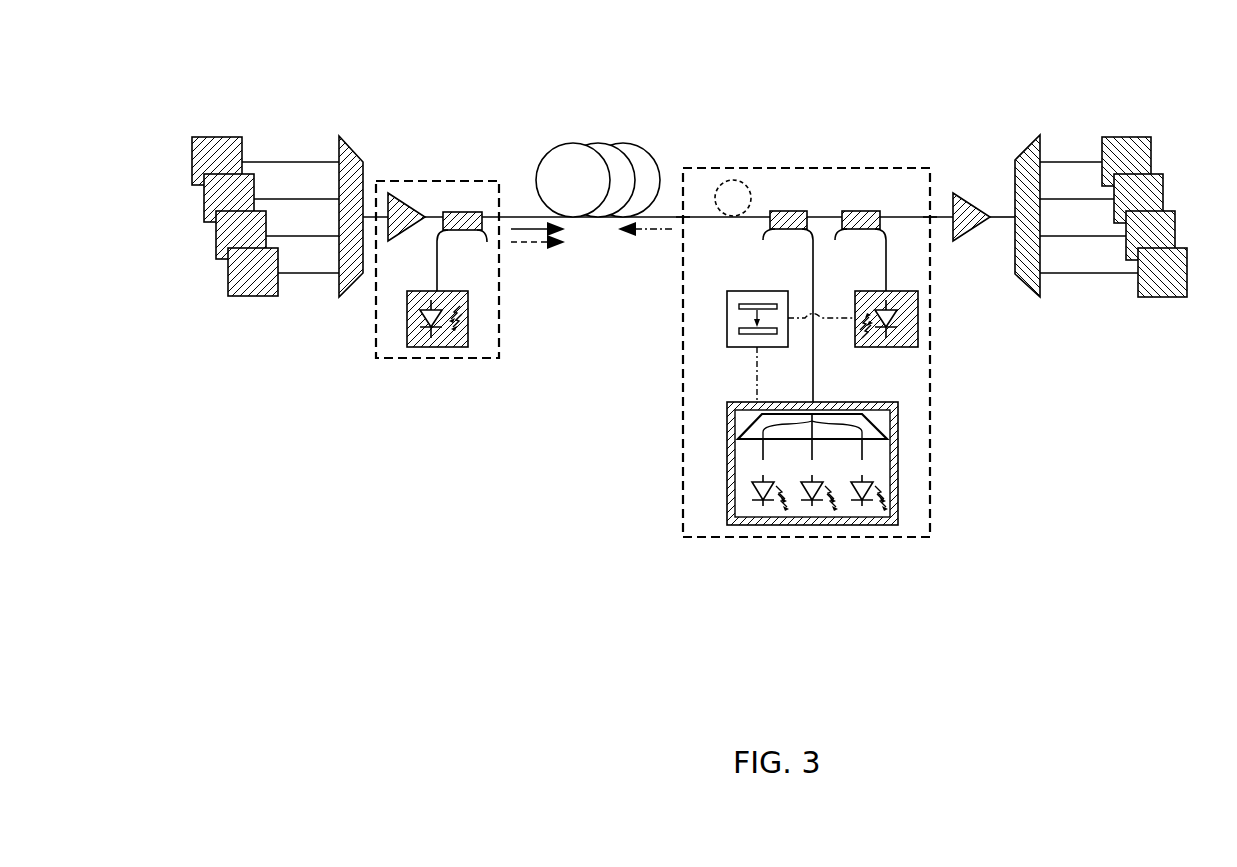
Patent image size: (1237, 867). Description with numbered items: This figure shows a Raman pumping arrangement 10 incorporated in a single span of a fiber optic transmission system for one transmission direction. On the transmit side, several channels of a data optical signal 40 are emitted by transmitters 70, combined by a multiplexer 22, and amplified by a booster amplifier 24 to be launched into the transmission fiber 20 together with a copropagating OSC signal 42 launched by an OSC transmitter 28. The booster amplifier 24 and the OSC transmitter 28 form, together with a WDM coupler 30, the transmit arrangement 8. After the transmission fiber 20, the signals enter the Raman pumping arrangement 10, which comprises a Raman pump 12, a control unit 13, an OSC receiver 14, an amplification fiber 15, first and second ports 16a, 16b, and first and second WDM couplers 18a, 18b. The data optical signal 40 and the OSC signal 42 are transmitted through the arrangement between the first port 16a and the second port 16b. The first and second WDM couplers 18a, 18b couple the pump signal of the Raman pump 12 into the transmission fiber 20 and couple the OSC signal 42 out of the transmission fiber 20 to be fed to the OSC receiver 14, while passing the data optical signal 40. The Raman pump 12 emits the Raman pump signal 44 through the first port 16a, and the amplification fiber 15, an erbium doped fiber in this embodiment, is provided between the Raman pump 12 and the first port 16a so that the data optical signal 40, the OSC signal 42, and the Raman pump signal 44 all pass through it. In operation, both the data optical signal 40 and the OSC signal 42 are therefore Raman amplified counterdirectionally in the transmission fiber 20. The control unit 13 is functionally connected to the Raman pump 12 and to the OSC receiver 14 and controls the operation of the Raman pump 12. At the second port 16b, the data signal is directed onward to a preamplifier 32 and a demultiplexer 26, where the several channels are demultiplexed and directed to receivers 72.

The transmit arrangement 8 is at (437, 370).
The Raman pumping arrangement 10 is at (830, 552).
The Raman pump 12 is at (730, 475).
The control unit 13 is at (725, 318).
The OSC receiver 14 is at (920, 338).
The amplification fiber 15 is at (733, 180).
The first port 16a is at (682, 222).
The second port 16b is at (929, 223).
The first WDM coupler 18a is at (793, 211).
The second WDM coupler 18b is at (862, 211).
The transmission fiber 20 is at (597, 128).
The multiplexer 22 is at (337, 292).
The booster amplifier 24 is at (398, 198).
The demultiplexer 26 is at (1040, 285).
The OSC transmitter 28 is at (422, 347).
The WDM coupler 30 is at (465, 211).
The preamplifier 32 is at (967, 200).
The data optical signal 40 is at (512, 240).
The OSC signal 42 is at (563, 244).
The Raman pump signal 44 is at (655, 232).
The transmitters 70 is at (216, 137).
The receivers 72 is at (1127, 137).